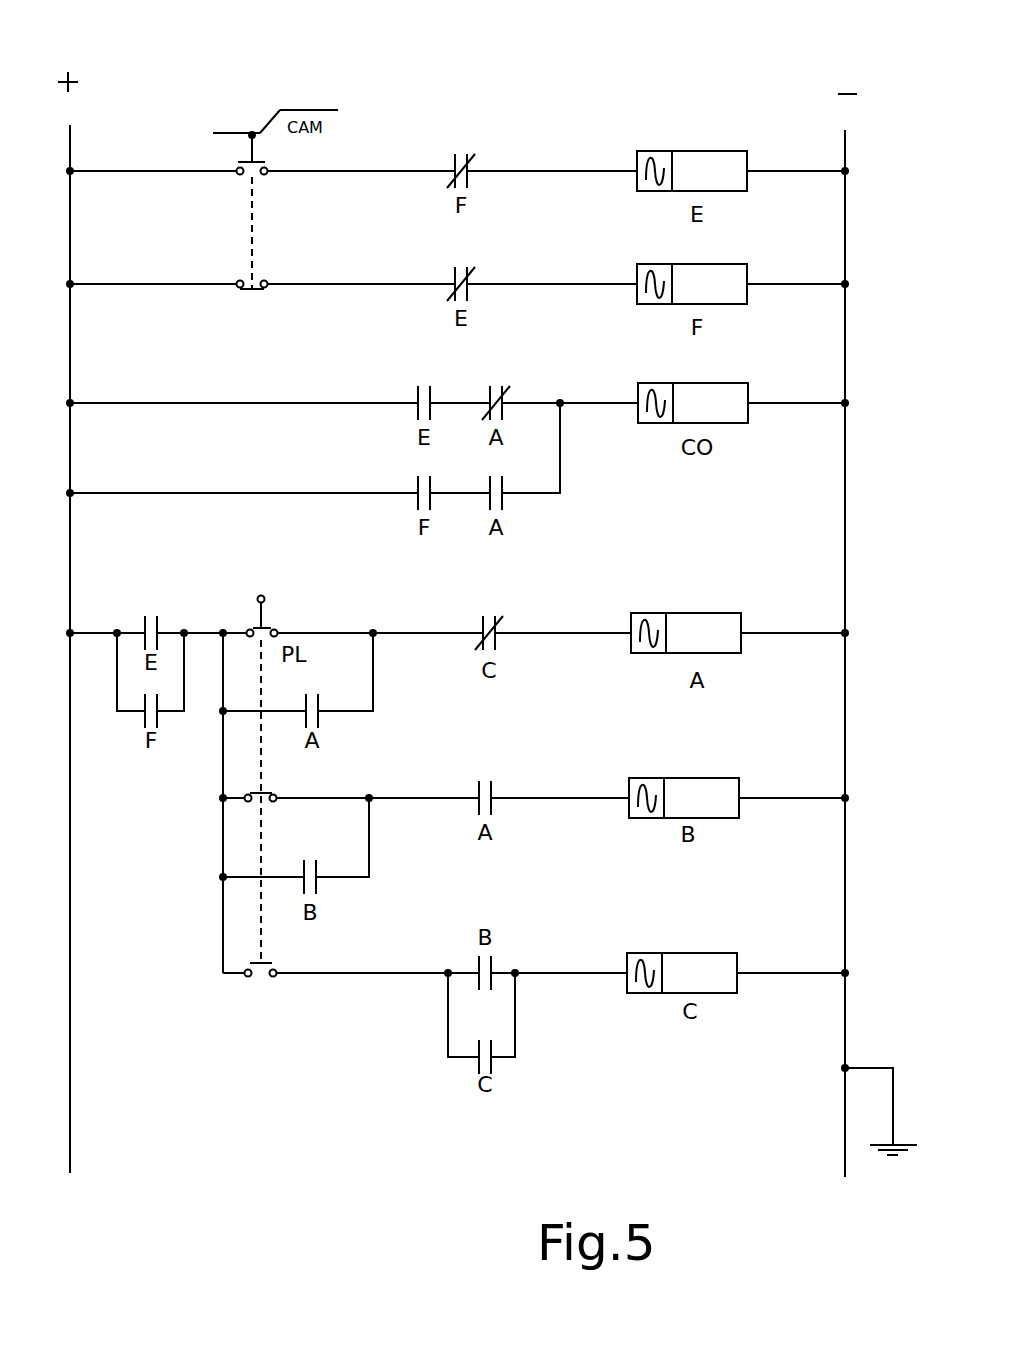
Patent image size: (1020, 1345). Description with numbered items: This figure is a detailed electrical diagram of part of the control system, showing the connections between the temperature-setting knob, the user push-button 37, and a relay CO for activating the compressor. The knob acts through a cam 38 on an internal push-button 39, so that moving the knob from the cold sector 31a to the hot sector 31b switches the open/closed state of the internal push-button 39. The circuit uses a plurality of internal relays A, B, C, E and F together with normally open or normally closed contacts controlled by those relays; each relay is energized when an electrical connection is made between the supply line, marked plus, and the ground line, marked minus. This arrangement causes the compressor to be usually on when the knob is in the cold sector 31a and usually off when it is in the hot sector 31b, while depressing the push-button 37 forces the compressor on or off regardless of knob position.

The cold sector 31a is at (223, 128).
The hot sector 31b is at (312, 106).
The push-button 37 is at (255, 626).
The cam 38 is at (270, 123).
The internal push-button 39 is at (240, 176).